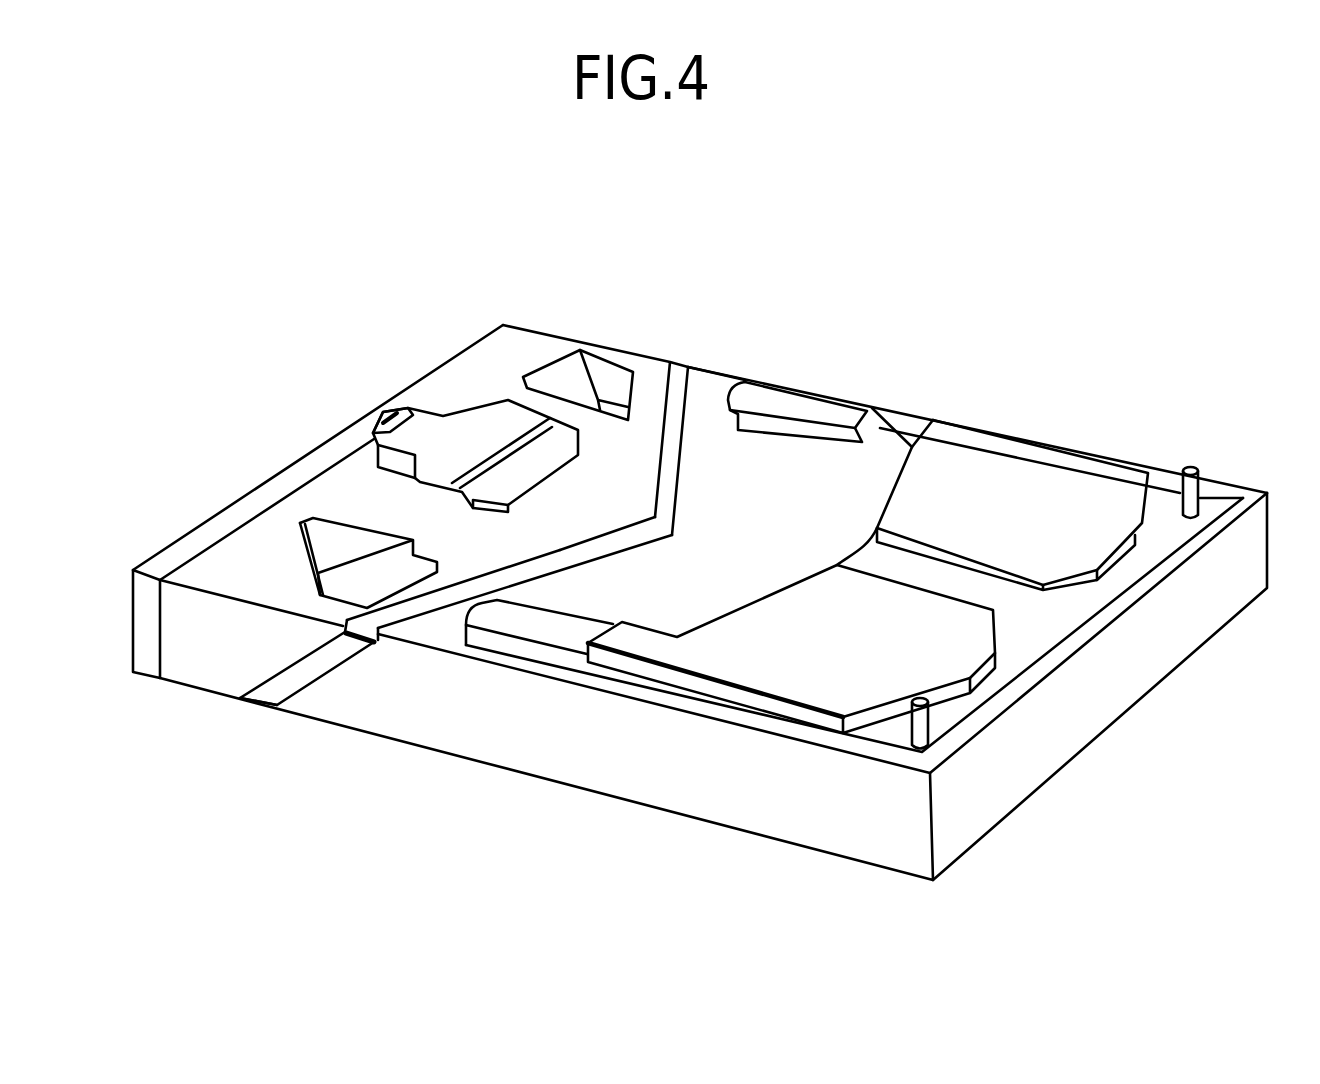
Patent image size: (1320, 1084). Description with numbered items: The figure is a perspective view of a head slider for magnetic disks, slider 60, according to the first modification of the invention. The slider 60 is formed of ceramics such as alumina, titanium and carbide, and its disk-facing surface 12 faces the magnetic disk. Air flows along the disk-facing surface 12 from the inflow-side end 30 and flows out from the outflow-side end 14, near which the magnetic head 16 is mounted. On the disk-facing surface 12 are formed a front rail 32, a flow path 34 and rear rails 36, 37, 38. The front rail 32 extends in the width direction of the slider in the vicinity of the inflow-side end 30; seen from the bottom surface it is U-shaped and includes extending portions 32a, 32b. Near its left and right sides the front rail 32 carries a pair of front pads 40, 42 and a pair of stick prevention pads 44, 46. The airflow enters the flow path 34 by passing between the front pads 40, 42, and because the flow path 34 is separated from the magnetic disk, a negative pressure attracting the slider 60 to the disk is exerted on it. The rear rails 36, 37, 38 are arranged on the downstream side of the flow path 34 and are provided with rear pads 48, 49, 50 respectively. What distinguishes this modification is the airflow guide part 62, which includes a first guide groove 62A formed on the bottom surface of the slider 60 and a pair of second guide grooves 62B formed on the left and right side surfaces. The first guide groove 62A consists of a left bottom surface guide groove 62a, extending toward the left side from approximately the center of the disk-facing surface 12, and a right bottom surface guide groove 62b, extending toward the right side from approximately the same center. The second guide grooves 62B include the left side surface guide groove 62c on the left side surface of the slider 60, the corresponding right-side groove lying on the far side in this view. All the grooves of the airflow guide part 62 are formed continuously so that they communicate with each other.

The disk-facing surface 12 is at (744, 381).
The outflow-side end 14 is at (206, 518).
The magnetic head 16 is at (383, 412).
The inflow-side end 30 is at (1035, 760).
The front rail 32 is at (1045, 604).
The extending portion 32a is at (532, 627).
The extending portion 32b is at (833, 411).
The flow path 34 is at (867, 483).
The rear rail 36 is at (302, 556).
The rear rail 37 is at (548, 478).
The rear rail 38 is at (604, 375).
The front pad 40 is at (767, 670).
The front pad 42 is at (1022, 452).
The stick prevention pad 44 is at (917, 727).
The stick prevention pad 46 is at (1200, 478).
The rear pad 48 is at (350, 537).
The rear pad 49 is at (487, 427).
The rear pad 50 is at (565, 375).
The slider 60 is at (770, 214).
The airflow guide part 62 is at (506, 561).
The left bottom surface guide groove 62a is at (572, 563).
The right bottom surface guide groove 62b is at (662, 441).
The left side surface guide groove 62c is at (266, 690).
The first guide groove 62A is at (633, 569).
The second guide grooves 62B is at (334, 686).